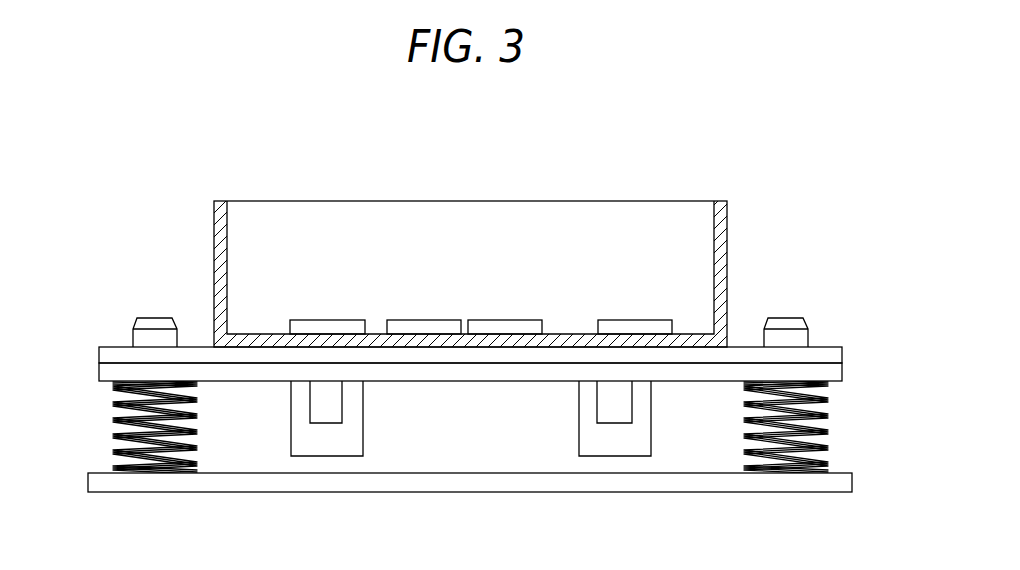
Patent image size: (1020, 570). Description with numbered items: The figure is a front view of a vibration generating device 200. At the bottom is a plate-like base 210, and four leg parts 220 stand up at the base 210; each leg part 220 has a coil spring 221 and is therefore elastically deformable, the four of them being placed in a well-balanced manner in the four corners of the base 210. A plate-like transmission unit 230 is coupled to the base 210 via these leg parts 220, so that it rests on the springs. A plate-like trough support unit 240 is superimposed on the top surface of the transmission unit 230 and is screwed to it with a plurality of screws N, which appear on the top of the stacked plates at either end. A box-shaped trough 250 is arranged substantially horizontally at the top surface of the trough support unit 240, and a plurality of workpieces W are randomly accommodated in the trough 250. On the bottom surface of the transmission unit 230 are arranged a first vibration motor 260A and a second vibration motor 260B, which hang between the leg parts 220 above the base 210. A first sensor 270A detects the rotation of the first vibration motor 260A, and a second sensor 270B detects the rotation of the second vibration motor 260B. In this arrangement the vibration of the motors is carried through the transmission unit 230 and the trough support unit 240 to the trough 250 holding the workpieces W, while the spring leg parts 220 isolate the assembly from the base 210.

The vibration generating device 200 is at (711, 150).
The base 210 is at (466, 482).
The leg part 220 is at (469, 427).
The coil spring 221 is at (865, 430).
The transmission unit 230 is at (108, 372).
The trough support unit 240 is at (112, 349).
The trough 250 is at (722, 219).
The first vibration motor 260A is at (326, 437).
The second vibration motor 260B is at (615, 437).
The first sensor 270A is at (323, 397).
The second sensor 270B is at (612, 397).
The workpiece W is at (428, 325).
The screw N is at (153, 331).